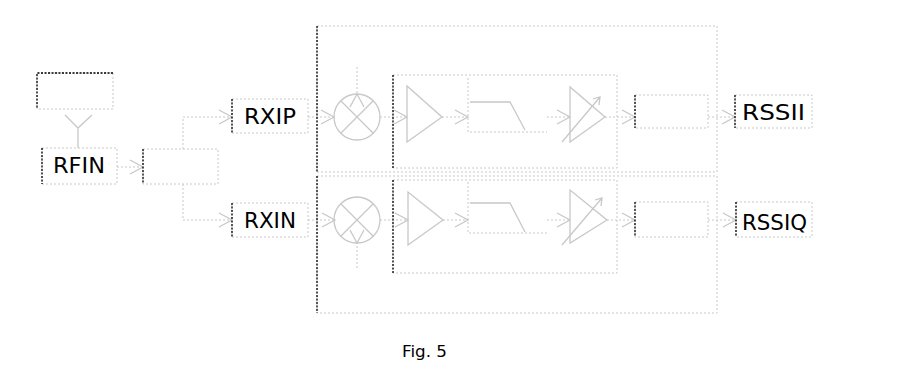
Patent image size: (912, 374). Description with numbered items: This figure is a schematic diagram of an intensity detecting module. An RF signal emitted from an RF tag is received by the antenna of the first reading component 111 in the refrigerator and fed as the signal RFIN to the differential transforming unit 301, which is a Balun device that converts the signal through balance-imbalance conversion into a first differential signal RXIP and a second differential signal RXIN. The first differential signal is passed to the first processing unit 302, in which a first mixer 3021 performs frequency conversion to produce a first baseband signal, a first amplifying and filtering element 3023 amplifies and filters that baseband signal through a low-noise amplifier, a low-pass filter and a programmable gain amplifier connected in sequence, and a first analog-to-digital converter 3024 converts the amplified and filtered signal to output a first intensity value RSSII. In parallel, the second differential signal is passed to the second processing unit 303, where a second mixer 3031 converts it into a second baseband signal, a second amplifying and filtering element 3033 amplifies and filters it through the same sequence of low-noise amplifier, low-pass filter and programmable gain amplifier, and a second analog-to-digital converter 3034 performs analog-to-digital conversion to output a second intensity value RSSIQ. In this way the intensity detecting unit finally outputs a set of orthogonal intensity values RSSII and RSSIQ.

The first reading component 111 is at (105, 87).
The differential transforming unit 301 is at (152, 182).
The first processing unit 302 is at (718, 65).
The first mixer 3021 is at (355, 91).
The first amplifying and filtering element 3023 is at (485, 75).
The first analog-to-digital converter 3024 is at (683, 80).
The second processing unit 303 is at (718, 268).
The second mixer 3031 is at (357, 246).
The second amplifying and filtering element 3033 is at (457, 273).
The second analog-to-digital converter 3034 is at (658, 238).